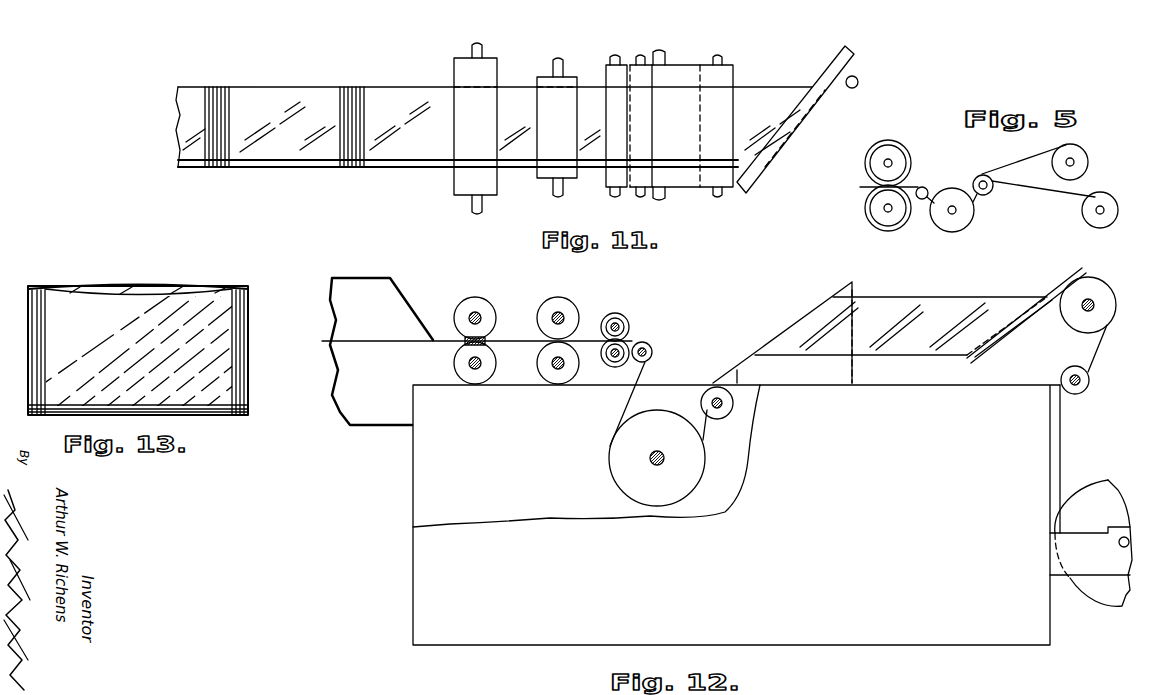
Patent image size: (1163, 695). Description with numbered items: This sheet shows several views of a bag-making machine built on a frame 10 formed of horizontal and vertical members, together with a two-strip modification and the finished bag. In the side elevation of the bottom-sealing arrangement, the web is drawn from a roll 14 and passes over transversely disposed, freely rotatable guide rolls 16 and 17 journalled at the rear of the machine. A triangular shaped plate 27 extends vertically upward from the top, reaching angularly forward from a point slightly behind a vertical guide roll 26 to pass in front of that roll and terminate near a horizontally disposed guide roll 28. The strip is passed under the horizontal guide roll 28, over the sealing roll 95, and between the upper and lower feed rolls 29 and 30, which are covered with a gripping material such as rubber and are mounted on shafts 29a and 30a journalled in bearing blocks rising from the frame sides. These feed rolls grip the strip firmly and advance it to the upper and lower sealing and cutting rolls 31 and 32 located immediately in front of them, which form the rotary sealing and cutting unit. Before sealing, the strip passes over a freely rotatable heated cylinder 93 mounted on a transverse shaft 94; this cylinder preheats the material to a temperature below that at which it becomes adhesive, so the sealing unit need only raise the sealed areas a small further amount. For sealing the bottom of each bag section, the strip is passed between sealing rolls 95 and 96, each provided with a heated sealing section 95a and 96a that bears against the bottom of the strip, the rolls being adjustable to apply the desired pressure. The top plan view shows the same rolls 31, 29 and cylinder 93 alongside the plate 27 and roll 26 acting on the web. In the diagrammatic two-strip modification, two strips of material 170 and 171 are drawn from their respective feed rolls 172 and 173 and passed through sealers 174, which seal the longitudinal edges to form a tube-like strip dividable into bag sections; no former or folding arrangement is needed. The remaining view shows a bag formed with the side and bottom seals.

In FIG. 12, the frame 10 is at (826, 516).
In FIG. 12, the roll 14 is at (1092, 490).
In FIG. 12, the guide roll 16 is at (1089, 376).
In FIG. 12, the guide roll 17 is at (1093, 284).
In FIG. 11, the guide roll 26 is at (851, 88).
In FIG. 11, the triangular shaped plate 27 is at (766, 92).
In FIG. 12, the triangular shaped plate 27 is at (784, 330).
In FIG. 12, the horizontally disposed guide roll 28 is at (651, 348).
In FIG. 11, the upper feed roll 29 is at (546, 76).
In FIG. 12, the upper feed roll 29 is at (570, 307).
In FIG. 12, the shaft 29a is at (563, 316).
In FIG. 12, the lower feed roll 30 is at (559, 385).
In FIG. 12, the shaft 30a is at (556, 366).
In FIG. 11, the upper sealing and cutting roll 31 is at (458, 58).
In FIG. 12, the upper sealing and cutting roll 31 is at (483, 298).
In FIG. 12, the lower sealing and cutting roll 32 is at (463, 385).
In FIG. 11, the heated cylinder 93 is at (683, 187).
In FIG. 5, the heated cylinder 93 is at (950, 226).
In FIG. 12, the heated cylinder 93 is at (611, 473).
In FIG. 12, the transverse shaft 94 is at (654, 457).
In FIG. 12, the sealing roll 95 is at (615, 362).
In FIG. 12, the heated sealing section 95a is at (612, 356).
In FIG. 12, the sealing roll 96 is at (625, 319).
In FIG. 12, the heated sealing section 96a is at (630, 326).
In FIG. 5, the strip of material 170 is at (1027, 160).
In FIG. 5, the strip of material 171 is at (1032, 187).
In FIG. 5, the feed roll 172 is at (1087, 162).
In FIG. 5, the feed roll 173 is at (1108, 197).
In FIG. 5, the sealers 174 is at (906, 164).